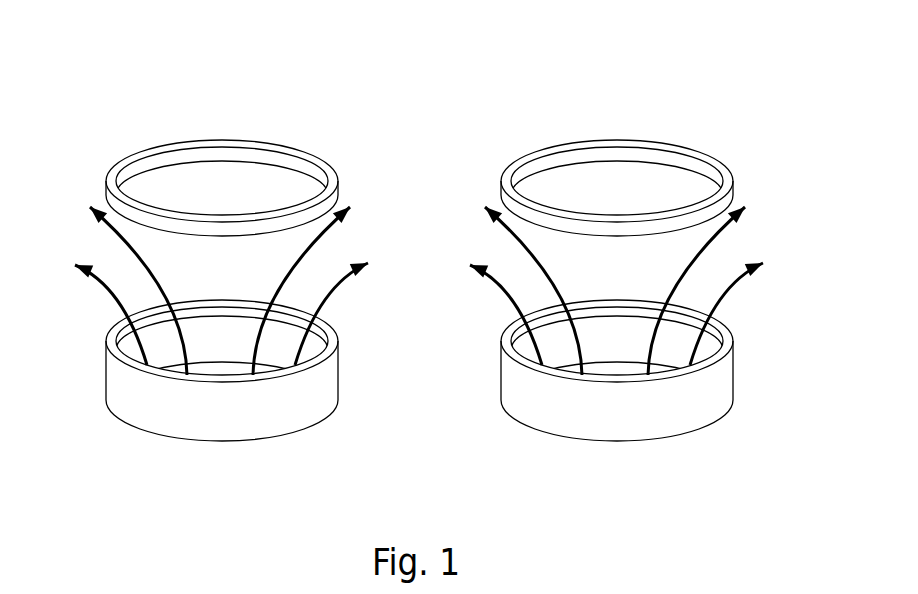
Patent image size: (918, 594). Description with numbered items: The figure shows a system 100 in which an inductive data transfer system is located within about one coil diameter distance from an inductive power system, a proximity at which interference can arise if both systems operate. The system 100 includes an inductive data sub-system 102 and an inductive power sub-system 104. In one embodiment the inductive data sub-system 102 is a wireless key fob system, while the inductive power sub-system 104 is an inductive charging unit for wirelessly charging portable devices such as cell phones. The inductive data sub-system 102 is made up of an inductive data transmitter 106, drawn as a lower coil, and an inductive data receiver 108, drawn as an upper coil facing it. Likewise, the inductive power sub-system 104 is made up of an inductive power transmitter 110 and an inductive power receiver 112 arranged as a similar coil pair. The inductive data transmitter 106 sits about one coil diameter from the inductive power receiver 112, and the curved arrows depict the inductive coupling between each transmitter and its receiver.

The system 100 is at (433, 252).
The inductive data sub-system 102 is at (227, 293).
The inductive power sub-system 104 is at (647, 296).
The inductive data transmitter 106 is at (338, 383).
The inductive data receiver 108 is at (338, 203).
The inductive power transmitter 110 is at (659, 370).
The inductive power receiver 112 is at (654, 188).